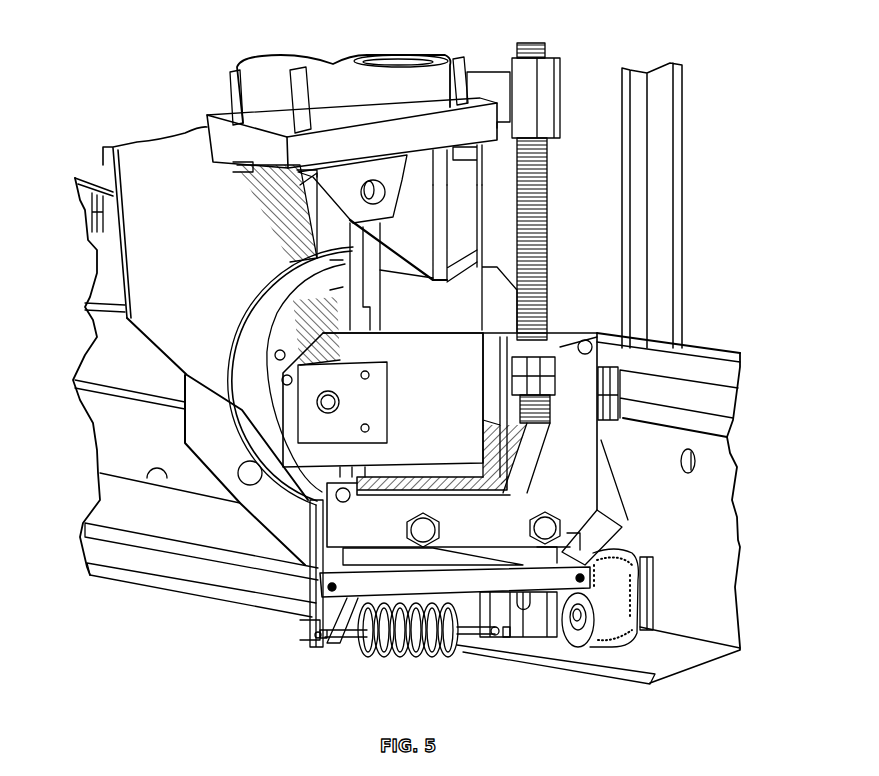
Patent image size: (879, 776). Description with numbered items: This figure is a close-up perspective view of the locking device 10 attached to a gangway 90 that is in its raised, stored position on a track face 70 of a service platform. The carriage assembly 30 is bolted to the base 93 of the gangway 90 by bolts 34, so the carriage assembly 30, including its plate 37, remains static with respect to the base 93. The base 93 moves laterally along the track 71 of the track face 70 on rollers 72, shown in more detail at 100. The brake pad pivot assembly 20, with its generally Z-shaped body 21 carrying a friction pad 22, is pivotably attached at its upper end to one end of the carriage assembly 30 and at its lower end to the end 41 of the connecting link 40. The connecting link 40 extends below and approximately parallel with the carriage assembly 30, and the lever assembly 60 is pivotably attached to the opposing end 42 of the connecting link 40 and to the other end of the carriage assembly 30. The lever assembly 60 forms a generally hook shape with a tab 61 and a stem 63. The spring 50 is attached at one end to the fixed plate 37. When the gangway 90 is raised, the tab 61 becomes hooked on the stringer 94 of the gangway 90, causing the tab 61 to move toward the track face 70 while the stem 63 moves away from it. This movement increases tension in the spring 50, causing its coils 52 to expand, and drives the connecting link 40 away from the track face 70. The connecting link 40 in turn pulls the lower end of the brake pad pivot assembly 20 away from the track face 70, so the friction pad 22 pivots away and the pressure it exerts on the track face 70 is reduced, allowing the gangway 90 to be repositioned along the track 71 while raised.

The locking device 10 is at (302, 507).
The brake pad pivot assembly 20 is at (612, 538).
The body 21 is at (615, 510).
The friction pad 22 is at (617, 403).
The carriage assembly 30 is at (563, 467).
The bolts 34 is at (547, 530).
The plate 37 is at (503, 637).
The connecting link 40 is at (358, 583).
The end of connecting link 41 is at (550, 588).
The opposing end of connecting link 42 is at (330, 642).
The spring 50 is at (410, 658).
The coils 52 is at (400, 653).
The lever assembly 60 is at (268, 341).
The tab 61 is at (307, 262).
The stem 63 is at (320, 613).
The track face 70 is at (720, 588).
The track 71 is at (647, 660).
The rollers 72 is at (607, 647).
The gangway 90 is at (70, 290).
The base 93 is at (280, 530).
The stringer 94 is at (152, 180).
The roller detail 100 is at (733, 302).